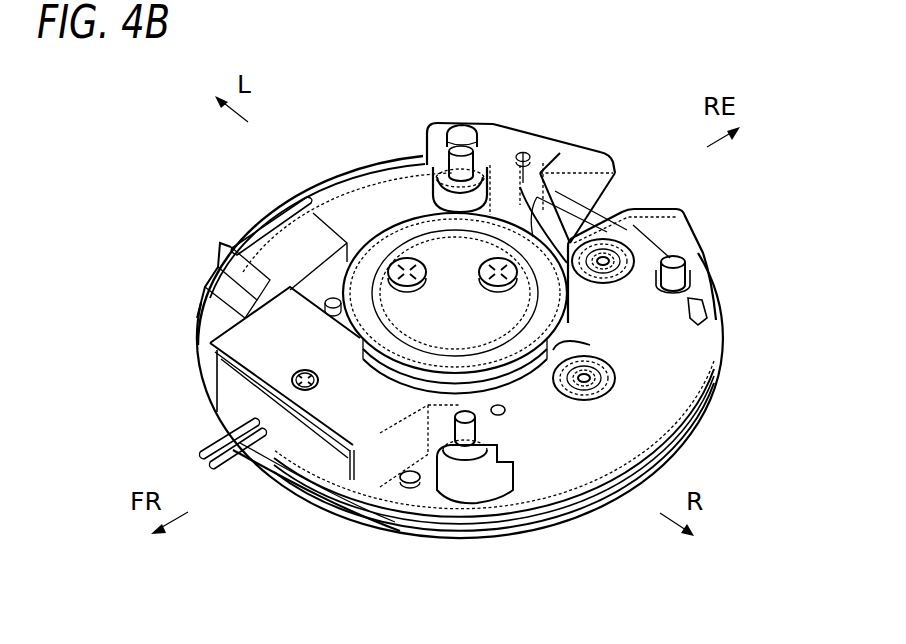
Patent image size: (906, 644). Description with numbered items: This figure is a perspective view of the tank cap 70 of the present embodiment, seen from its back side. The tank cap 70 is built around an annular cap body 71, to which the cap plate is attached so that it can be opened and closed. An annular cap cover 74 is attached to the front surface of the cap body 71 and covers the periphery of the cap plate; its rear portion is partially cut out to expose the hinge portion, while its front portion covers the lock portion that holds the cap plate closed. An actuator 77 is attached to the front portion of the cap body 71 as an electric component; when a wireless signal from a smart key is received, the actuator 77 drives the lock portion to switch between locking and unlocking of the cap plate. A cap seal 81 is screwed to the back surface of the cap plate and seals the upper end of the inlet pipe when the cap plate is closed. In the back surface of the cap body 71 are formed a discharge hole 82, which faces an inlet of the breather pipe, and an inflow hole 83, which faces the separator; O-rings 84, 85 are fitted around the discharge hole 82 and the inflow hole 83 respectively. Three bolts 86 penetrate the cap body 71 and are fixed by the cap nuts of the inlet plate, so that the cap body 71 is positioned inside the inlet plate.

The tank cap 70 is at (337, 132).
The cap body 71 is at (715, 224).
The cap cover 74 is at (547, 530).
The actuator 77 is at (290, 457).
The cap seal 81 is at (506, 213).
The discharge hole 82 is at (604, 262).
The inflow hole 83 is at (592, 372).
The O-ring 84 is at (633, 225).
The O-ring 85 is at (615, 368).
The bolts 86 is at (463, 128).